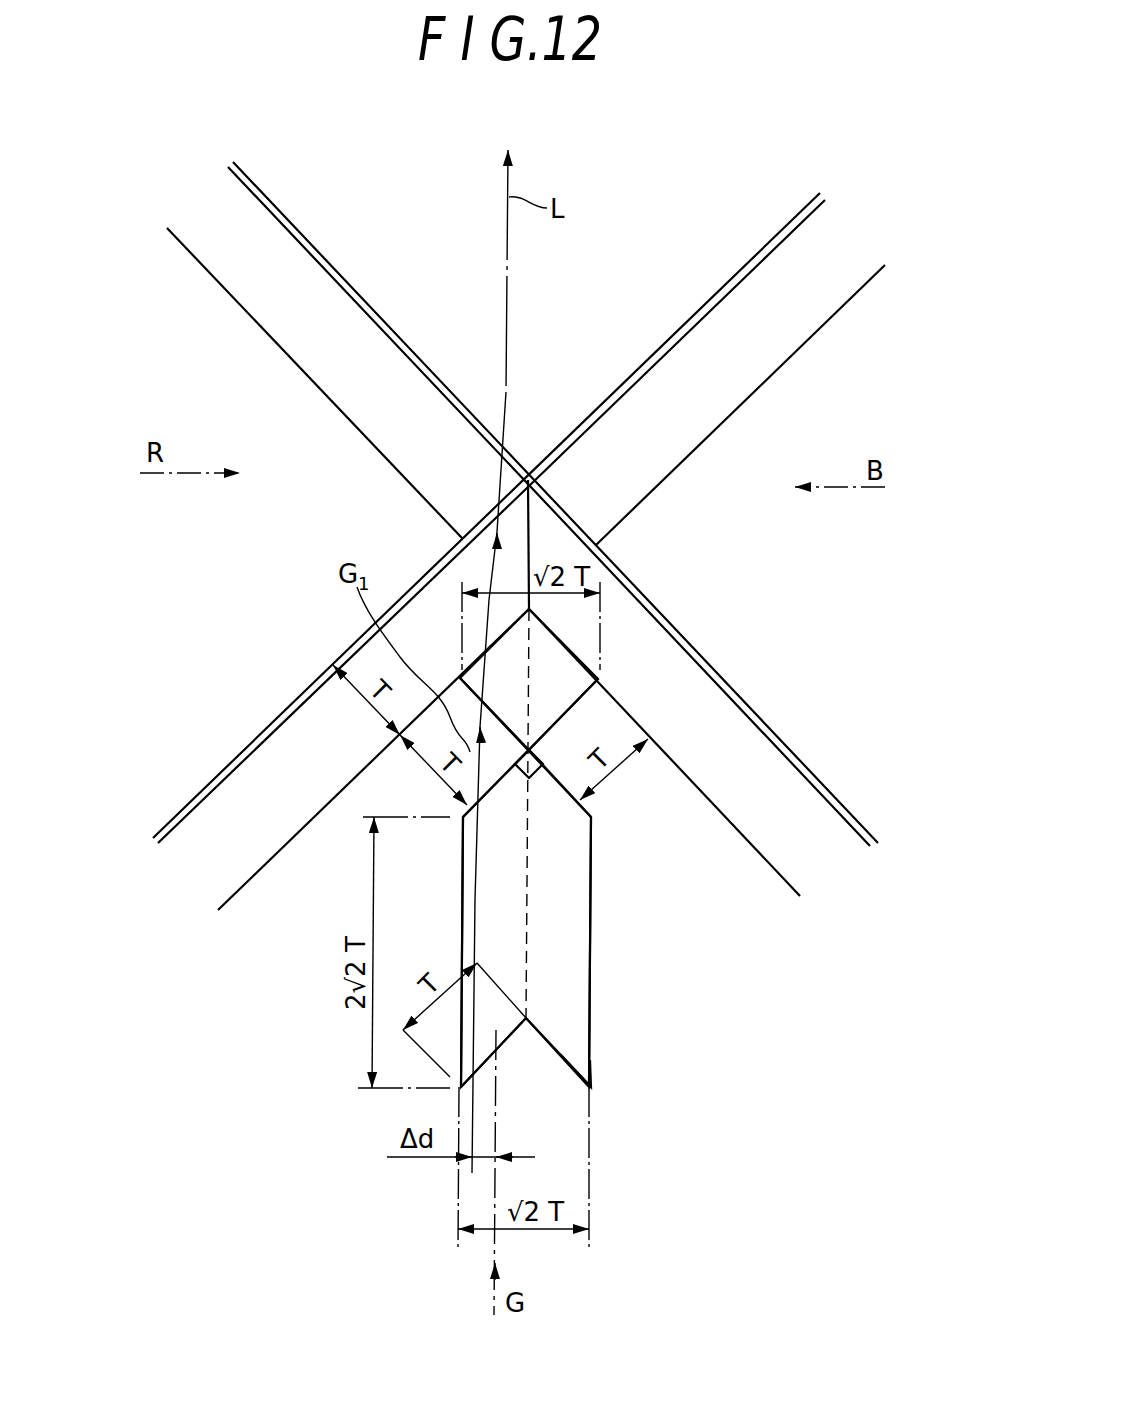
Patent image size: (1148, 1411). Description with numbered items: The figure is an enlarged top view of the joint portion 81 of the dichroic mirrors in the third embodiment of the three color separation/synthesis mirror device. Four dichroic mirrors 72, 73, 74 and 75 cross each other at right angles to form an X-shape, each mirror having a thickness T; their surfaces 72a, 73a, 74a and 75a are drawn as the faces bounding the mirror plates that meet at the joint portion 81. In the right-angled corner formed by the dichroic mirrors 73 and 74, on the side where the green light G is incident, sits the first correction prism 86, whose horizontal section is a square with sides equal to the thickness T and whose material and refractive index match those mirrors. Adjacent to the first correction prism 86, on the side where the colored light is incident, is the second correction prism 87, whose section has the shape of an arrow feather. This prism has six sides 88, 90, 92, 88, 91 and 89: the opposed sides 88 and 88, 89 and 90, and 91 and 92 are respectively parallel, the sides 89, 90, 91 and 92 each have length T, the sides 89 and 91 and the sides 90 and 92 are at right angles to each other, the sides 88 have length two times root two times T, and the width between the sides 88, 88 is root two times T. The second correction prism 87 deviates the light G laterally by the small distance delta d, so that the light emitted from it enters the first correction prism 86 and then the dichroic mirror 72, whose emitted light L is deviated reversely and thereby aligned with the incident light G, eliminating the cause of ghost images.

The dichroic mirror 72 is at (238, 302).
The surface of dichroic mirror 72a is at (292, 229).
The dichroic mirror 73 is at (277, 855).
The surface of dichroic mirror 73a is at (252, 748).
The dichroic mirror 74 is at (762, 856).
The surface of dichroic mirror 74a is at (784, 740).
The dichroic mirror 75 is at (838, 311).
The surface of dichroic mirror 75a is at (760, 257).
The joint portion 81 is at (533, 517).
The first correction prism 86 is at (572, 650).
The second correction prism 87 is at (596, 998).
The side of second correction prism 88 is at (462, 897).
The side of second correction prism 89 is at (488, 792).
The side of second correction prism 90 is at (525, 1027).
The side of second correction prism 91 is at (585, 800).
The side of second correction prism 92 is at (588, 1088).